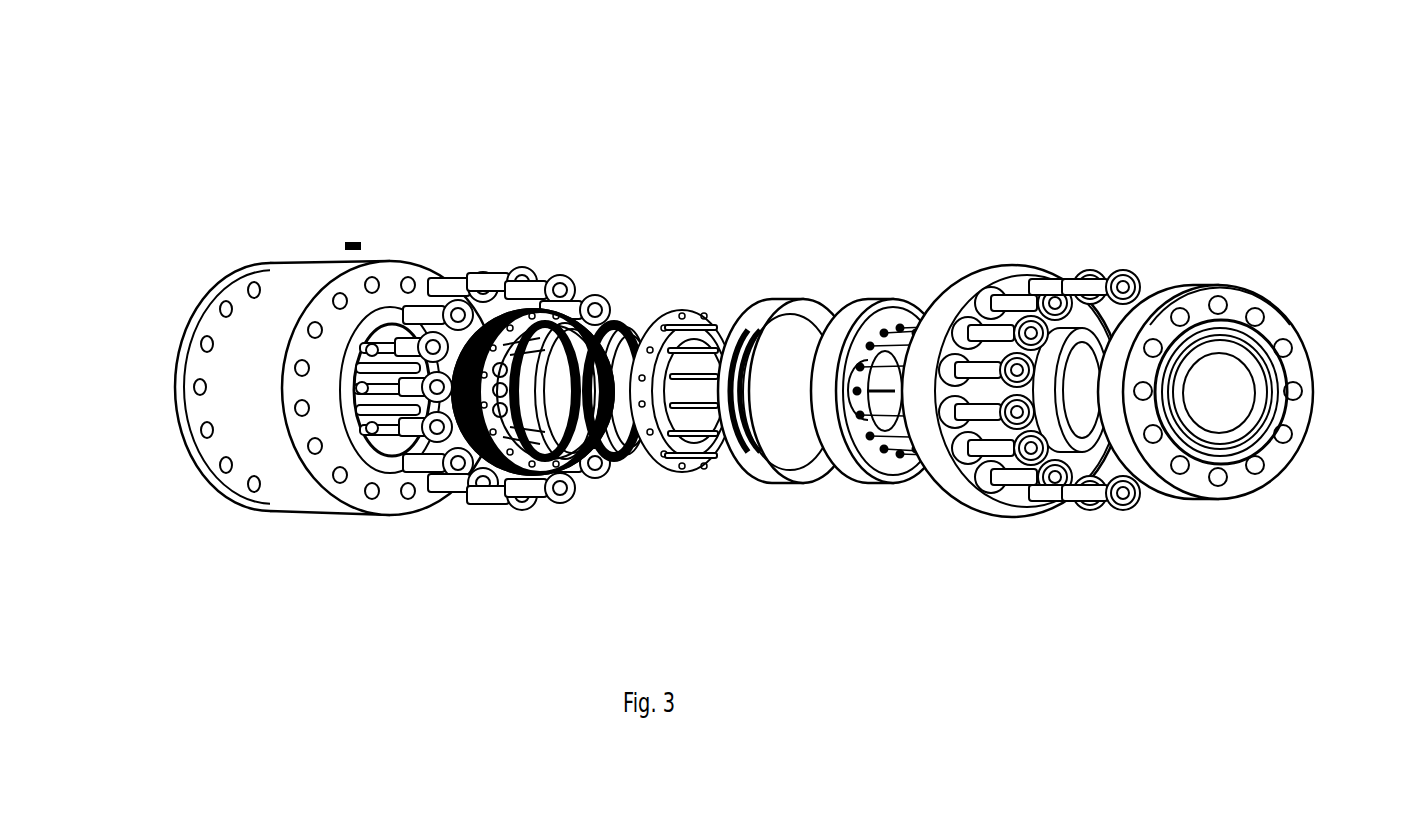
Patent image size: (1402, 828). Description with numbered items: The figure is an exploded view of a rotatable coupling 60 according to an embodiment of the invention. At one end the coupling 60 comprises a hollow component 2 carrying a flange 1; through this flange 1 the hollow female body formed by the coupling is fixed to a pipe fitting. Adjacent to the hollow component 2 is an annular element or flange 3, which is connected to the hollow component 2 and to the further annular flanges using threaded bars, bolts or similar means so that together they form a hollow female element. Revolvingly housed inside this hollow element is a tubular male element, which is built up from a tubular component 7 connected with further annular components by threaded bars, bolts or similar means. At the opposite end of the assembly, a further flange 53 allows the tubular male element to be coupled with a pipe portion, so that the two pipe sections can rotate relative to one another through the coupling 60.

The coupling 60 is at (842, 160).
The flange 1 is at (195, 463).
The hollow component 2 is at (283, 462).
The annular element or flange 3 is at (950, 498).
The tubular component 7 is at (1087, 392).
The further flange 53 is at (1258, 487).